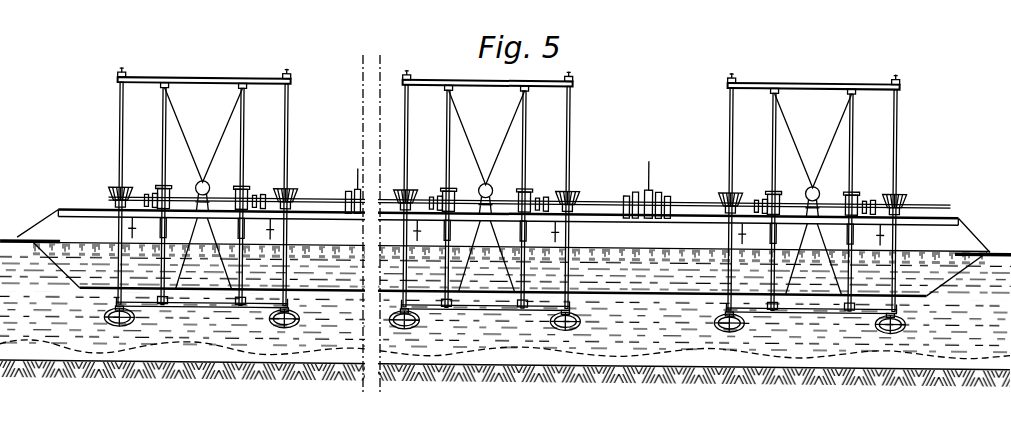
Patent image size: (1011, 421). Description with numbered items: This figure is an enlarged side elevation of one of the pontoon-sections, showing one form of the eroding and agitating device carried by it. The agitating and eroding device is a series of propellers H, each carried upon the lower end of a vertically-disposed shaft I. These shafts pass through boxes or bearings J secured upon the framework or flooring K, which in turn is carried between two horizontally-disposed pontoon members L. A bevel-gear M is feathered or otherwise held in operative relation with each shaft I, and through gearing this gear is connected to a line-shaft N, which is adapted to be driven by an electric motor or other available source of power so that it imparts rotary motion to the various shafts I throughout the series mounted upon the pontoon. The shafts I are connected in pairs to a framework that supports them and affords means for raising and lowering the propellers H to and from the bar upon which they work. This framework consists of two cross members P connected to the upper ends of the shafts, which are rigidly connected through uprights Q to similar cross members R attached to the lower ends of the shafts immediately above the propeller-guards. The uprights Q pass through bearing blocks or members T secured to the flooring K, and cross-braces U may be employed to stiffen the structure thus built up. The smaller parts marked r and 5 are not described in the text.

The vertically-disposed shaft I is at (118, 145).
The cross member P is at (508, 93).
The cross-brace U is at (185, 137).
The upright Q is at (165, 158).
The bevel-gear M is at (127, 186).
The bearing block T is at (170, 188).
The box or bearing J is at (108, 199).
The line-shaft N is at (529, 190).
The crank r is at (508, 188).
The framework or flooring K is at (503, 230).
The pontoon member L is at (618, 239).
The cross member R is at (200, 306).
The roller wheel 5 is at (504, 330).
The propeller H is at (110, 326).